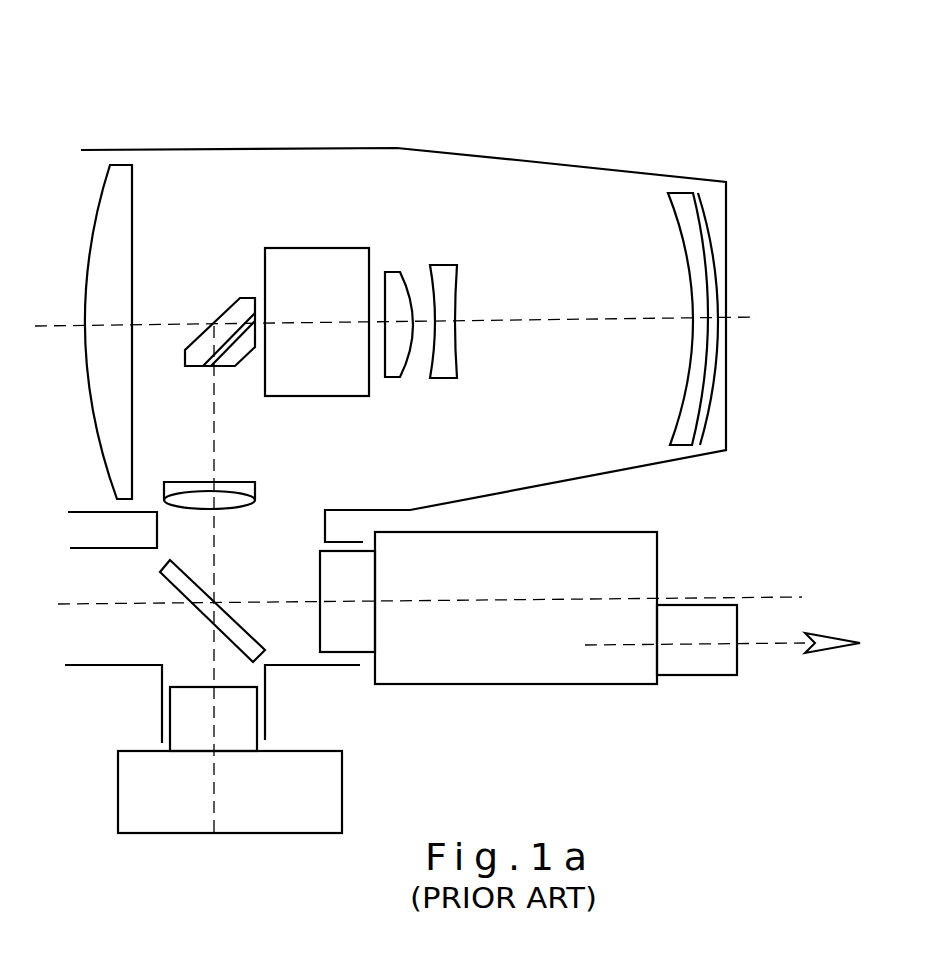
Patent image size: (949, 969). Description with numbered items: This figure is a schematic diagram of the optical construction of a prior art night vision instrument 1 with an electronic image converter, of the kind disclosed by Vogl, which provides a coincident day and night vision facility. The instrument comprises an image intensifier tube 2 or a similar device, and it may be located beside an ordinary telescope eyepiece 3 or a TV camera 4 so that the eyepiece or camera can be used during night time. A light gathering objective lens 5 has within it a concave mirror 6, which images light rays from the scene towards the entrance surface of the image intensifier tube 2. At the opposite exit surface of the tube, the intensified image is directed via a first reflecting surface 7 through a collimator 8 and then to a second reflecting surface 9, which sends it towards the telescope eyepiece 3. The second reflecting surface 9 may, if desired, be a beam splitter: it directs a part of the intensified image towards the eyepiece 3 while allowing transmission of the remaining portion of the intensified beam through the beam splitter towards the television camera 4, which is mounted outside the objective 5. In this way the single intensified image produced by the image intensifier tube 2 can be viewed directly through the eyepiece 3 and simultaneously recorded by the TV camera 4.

The night vision instrument 1 is at (477, 395).
The image intensifier tube 2 is at (318, 248).
The telescope eyepiece 3 is at (540, 677).
The TV camera 4 is at (330, 783).
The light gathering objective lens 5 is at (517, 160).
The concave mirror 6 is at (705, 213).
The first reflecting surface 7 is at (222, 312).
The collimator 8 is at (240, 482).
The second reflecting surface 9 is at (247, 628).